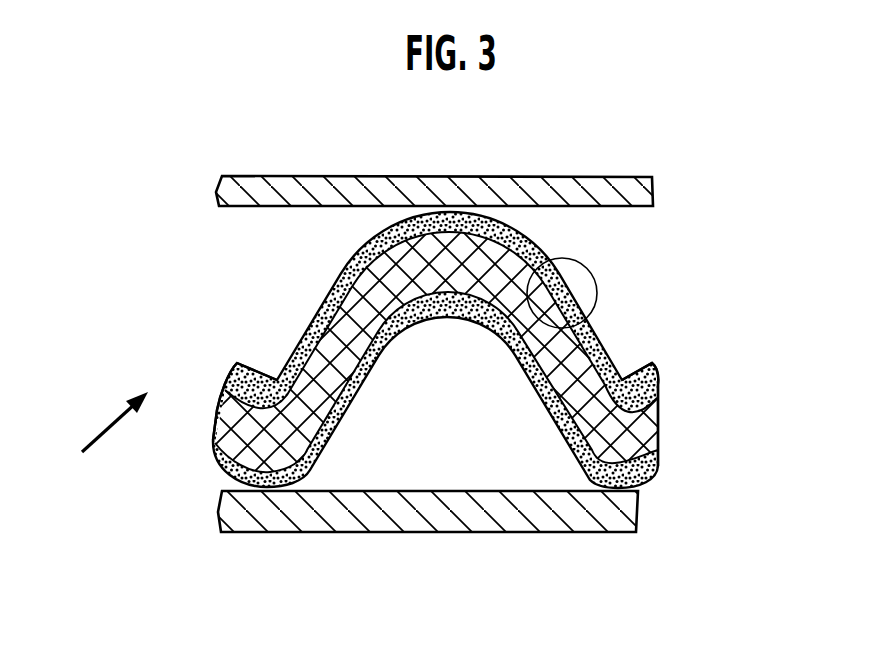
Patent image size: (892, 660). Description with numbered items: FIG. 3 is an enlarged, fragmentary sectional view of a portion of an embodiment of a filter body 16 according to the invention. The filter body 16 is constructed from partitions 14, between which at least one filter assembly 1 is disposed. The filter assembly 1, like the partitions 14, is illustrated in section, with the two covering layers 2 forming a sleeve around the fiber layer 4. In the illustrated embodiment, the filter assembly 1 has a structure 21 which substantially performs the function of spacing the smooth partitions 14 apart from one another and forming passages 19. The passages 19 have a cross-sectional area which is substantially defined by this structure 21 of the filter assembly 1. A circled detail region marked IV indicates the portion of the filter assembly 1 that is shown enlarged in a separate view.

The filter assembly 1 is at (472, 379).
The covering layers 2 is at (655, 369).
The fiber layer 4 is at (647, 418).
The partitions 14 is at (607, 188).
The filter body 16 is at (84, 444).
The passages 19 is at (490, 463).
The structure 21 is at (327, 300).
The detail IV is at (597, 277).